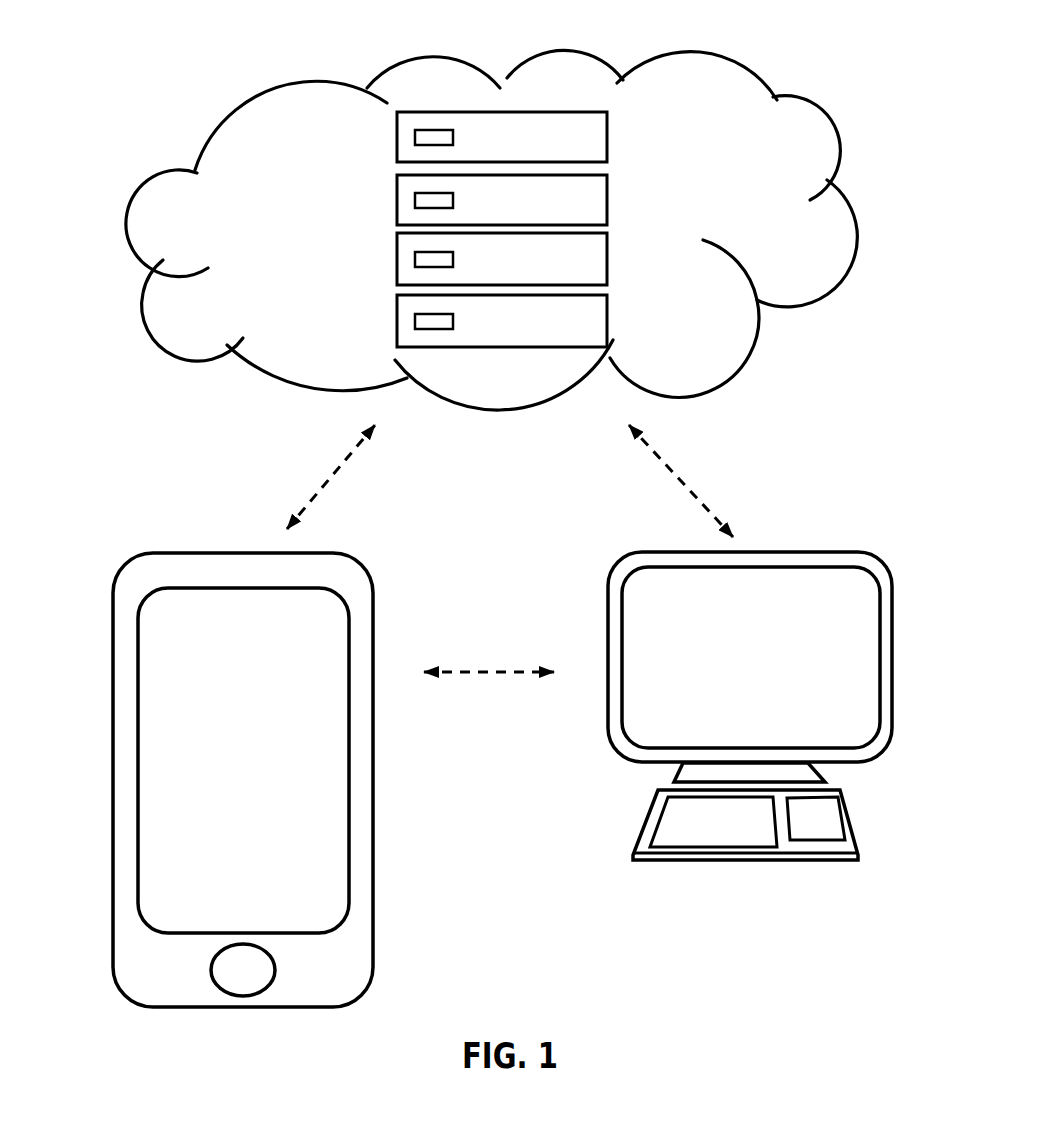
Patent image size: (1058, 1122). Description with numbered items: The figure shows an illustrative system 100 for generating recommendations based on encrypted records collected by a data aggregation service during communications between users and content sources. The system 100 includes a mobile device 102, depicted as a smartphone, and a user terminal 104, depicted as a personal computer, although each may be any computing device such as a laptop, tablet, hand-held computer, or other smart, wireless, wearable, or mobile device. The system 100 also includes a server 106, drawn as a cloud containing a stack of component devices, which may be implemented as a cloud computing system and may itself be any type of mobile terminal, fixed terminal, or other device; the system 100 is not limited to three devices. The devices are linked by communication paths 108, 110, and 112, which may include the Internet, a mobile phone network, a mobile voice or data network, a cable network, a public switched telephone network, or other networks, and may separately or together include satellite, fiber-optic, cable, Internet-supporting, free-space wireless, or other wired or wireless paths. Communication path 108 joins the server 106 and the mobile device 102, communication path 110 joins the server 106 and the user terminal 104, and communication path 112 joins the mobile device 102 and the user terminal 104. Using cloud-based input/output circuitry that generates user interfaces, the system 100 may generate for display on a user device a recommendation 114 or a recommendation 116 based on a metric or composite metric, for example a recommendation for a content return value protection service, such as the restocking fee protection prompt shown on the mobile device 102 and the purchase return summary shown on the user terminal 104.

The system 100 is at (498, 23).
The mobile device 102 is at (207, 736).
The user terminal 104 is at (785, 666).
The server 106 is at (797, 162).
The communication path 108 is at (302, 448).
The communication path 110 is at (690, 427).
The communication path 112 is at (472, 652).
The recommendation 114 is at (180, 660).
The recommendation 116 is at (853, 650).